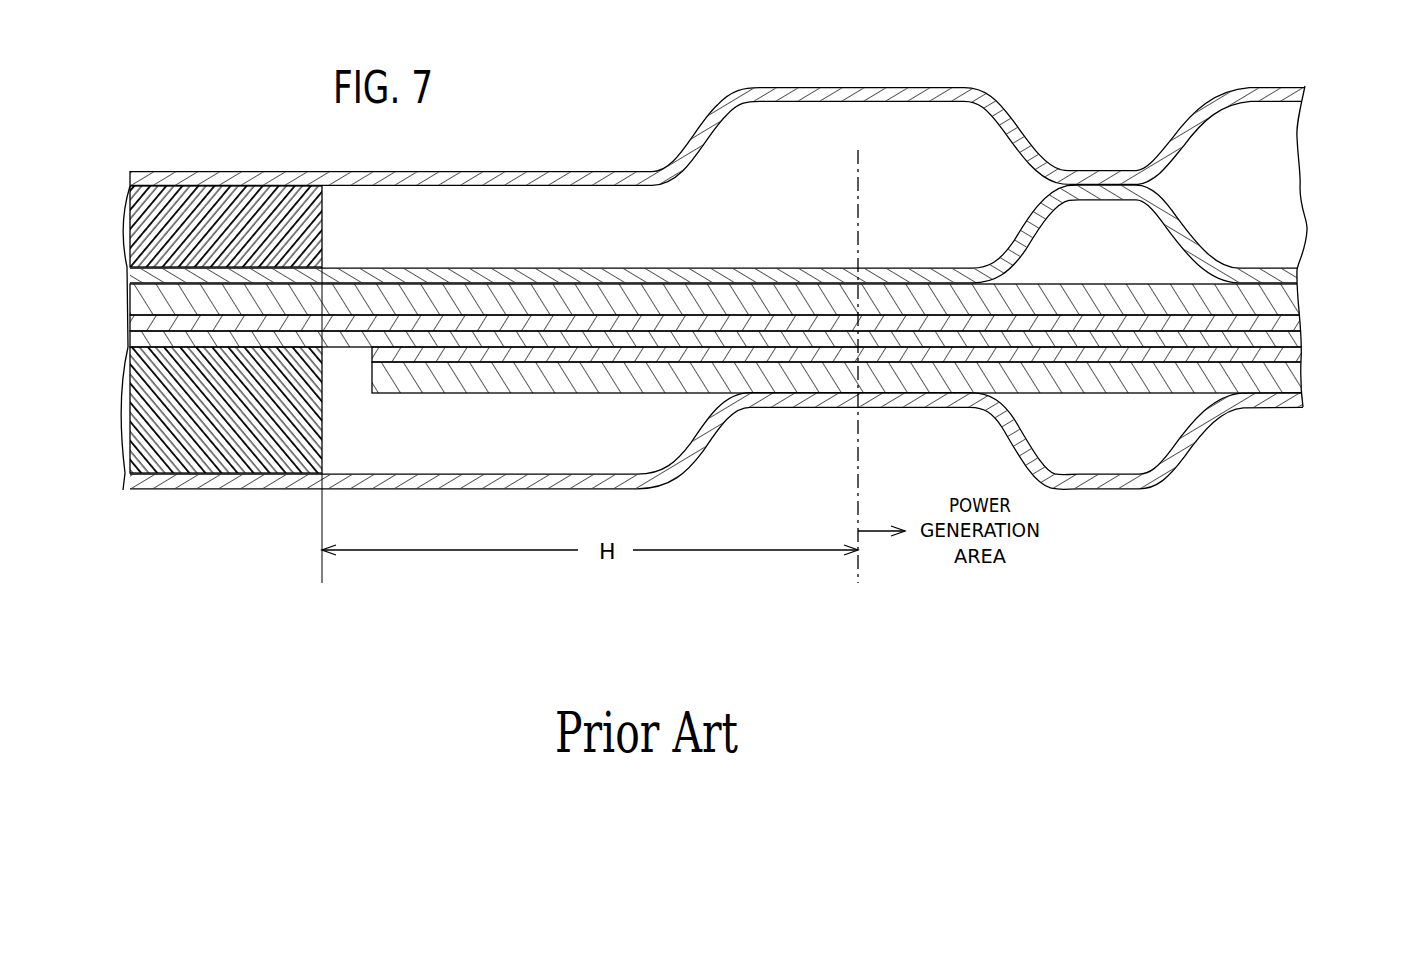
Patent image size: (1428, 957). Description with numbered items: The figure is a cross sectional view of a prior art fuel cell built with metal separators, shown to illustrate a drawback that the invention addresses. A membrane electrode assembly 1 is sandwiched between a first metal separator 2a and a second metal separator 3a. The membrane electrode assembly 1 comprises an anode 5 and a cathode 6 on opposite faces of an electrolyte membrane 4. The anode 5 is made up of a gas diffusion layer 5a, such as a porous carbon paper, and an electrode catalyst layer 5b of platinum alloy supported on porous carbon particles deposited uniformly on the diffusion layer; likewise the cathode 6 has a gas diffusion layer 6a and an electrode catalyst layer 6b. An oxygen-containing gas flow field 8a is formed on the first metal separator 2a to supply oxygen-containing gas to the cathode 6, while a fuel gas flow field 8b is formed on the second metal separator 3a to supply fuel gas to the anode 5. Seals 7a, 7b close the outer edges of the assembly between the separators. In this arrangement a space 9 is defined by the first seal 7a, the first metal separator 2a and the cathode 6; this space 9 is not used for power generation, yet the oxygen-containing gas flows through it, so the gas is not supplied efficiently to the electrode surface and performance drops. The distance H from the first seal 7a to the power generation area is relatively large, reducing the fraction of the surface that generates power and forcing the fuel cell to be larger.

The membrane electrode assembly 1 is at (771, 340).
The first metal separator 2a is at (1030, 140).
The second metal separator 3a is at (1202, 227).
The electrolyte membrane 4 is at (1282, 338).
The anode 5 is at (752, 305).
The gas diffusion layer 5a is at (1282, 298).
The electrode catalyst layer 5b is at (1282, 322).
The cathode 6 is at (873, 375).
The gas diffusion layer 6a is at (1287, 383).
The electrode catalyst layer 6b is at (1283, 353).
The first seal 7a is at (313, 433).
The seal member 7b is at (314, 237).
The oxygen-containing gas flow field 8a is at (1120, 440).
The fuel gas flow field 8b is at (1120, 232).
The space 9 is at (490, 432).